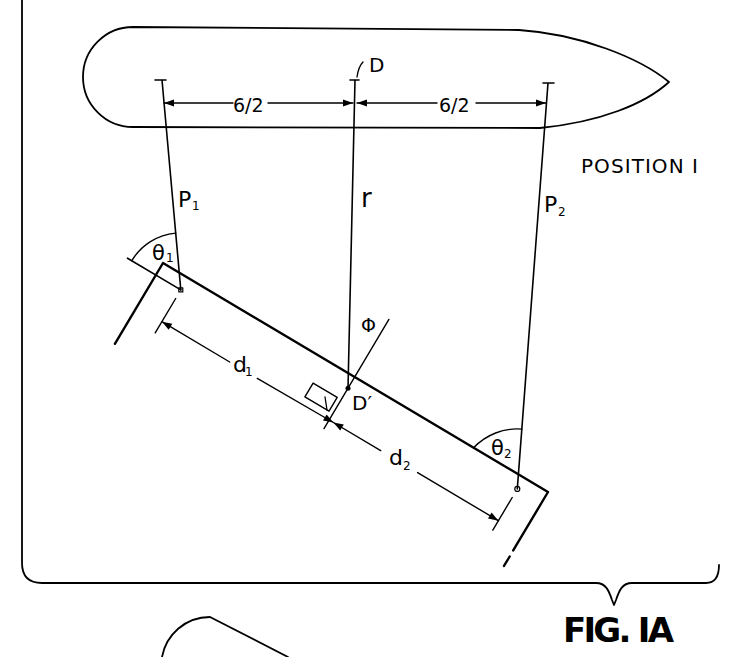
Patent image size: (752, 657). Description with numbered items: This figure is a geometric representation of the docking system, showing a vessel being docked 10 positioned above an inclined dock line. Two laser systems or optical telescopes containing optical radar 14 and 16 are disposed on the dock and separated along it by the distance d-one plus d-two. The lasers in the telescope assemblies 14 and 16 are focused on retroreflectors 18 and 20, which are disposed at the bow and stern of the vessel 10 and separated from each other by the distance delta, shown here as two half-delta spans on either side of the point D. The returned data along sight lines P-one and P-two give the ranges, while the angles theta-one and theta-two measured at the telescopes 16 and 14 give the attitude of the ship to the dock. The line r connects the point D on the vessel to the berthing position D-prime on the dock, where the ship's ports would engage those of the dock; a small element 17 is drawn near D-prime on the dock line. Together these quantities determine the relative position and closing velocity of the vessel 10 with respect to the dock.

The vessel being docked 10 is at (572, 52).
The retroreflector 20 is at (163, 78).
The retroreflector 18 is at (551, 83).
The optical telescope assembly containing optical radar 16 is at (183, 293).
The receiver unit on array 17 is at (324, 416).
The optical telescope assembly containing optical radar 14 is at (515, 488).